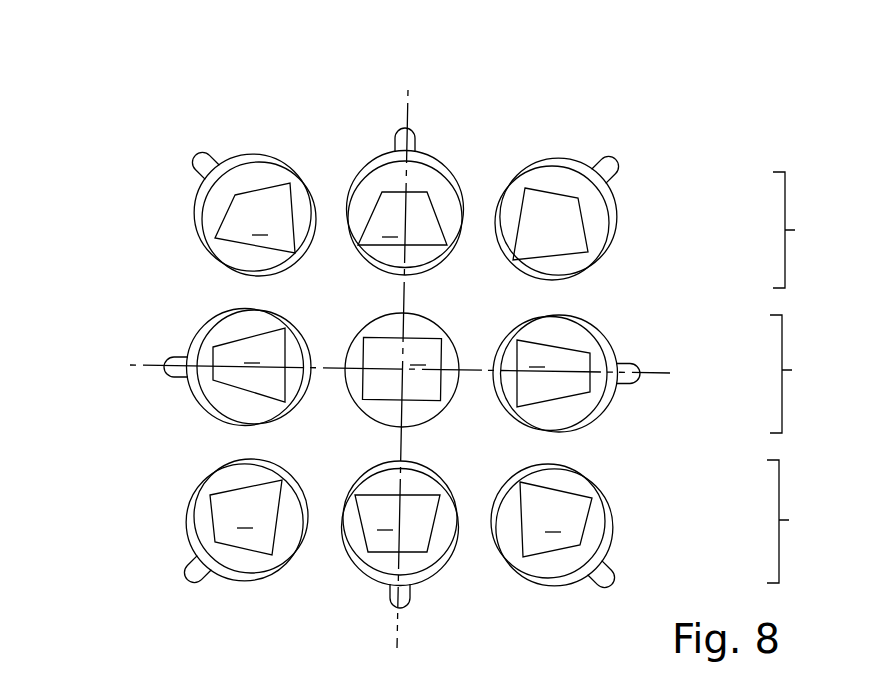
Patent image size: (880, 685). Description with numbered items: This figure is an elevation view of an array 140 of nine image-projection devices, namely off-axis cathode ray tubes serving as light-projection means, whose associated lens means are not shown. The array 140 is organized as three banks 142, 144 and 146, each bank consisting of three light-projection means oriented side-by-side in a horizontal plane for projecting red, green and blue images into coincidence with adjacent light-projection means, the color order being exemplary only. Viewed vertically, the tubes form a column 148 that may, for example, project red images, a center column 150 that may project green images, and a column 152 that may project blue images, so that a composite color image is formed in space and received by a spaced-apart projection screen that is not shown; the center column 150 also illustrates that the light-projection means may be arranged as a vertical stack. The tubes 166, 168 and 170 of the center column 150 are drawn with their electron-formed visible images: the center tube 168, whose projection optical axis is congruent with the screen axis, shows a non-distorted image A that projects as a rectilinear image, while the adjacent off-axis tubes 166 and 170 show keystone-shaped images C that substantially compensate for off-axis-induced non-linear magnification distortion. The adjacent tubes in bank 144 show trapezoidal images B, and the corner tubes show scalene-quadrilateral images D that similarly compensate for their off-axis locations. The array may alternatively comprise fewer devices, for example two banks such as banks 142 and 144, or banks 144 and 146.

The array 140 is at (90, 149).
The bank 142 is at (800, 230).
The bank 144 is at (797, 374).
The bank 146 is at (794, 521).
The column 148 is at (259, 78).
The center column 150 is at (408, 78).
The column 152 is at (558, 79).
The upper center cup 166 is at (442, 163).
The center cup 168 is at (443, 323).
The lower center cup 170 is at (437, 475).